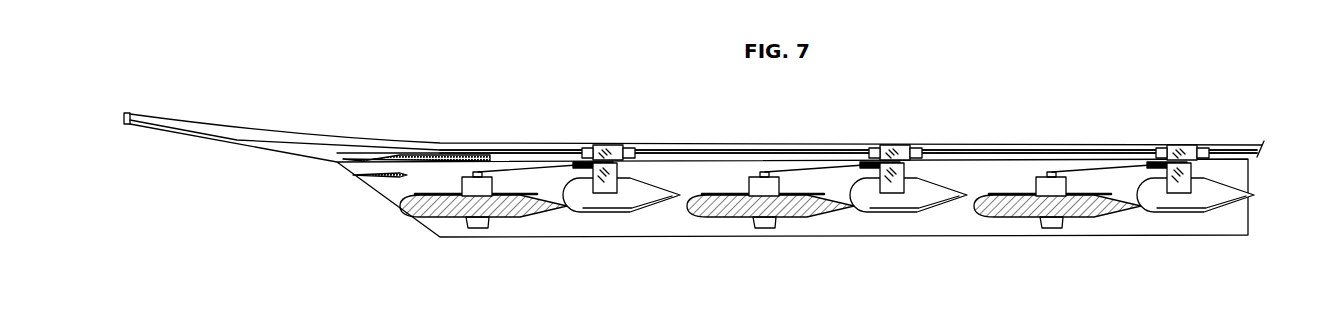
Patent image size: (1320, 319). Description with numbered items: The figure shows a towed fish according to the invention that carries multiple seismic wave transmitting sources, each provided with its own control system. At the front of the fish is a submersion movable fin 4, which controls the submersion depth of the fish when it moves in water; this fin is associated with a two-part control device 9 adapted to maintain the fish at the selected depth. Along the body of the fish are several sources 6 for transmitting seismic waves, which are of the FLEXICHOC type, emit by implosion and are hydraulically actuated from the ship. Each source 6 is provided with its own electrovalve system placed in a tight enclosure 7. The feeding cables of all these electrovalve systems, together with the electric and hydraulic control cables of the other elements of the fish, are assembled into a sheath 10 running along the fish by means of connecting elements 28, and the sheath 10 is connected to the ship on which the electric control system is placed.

The submersion movable fin 4 is at (383, 178).
The source for seismic wave transmission 6 is at (500, 200).
The tight enclosure 7 is at (608, 198).
The two-part control device 9 is at (427, 158).
The sheath 10 is at (535, 152).
The connecting elements 28 is at (613, 150).